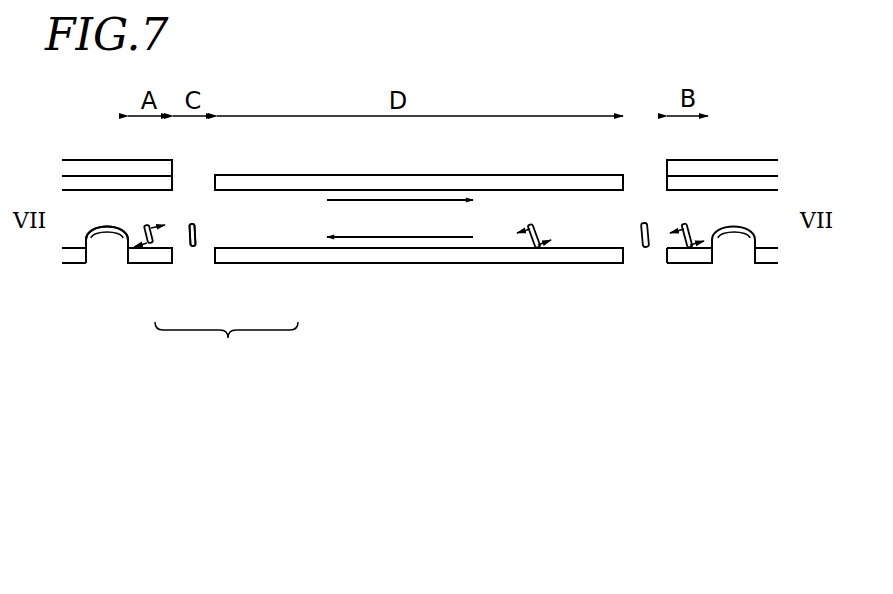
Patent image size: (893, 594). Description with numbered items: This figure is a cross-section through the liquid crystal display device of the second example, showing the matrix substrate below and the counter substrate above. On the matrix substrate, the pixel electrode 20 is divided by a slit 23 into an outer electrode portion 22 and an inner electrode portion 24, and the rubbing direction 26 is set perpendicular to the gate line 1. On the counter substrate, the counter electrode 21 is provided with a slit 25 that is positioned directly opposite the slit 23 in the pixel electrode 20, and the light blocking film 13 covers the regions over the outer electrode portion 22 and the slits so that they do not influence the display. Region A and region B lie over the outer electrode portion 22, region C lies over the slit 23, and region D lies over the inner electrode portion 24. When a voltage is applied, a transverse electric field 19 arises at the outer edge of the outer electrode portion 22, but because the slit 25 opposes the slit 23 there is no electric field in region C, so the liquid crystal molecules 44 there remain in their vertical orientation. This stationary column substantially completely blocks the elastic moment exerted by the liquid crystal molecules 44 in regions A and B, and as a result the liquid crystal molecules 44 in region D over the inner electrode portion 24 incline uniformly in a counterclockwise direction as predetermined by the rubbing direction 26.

The gate line 1 is at (76, 262).
The light blocking film 13 is at (100, 167).
The transverse electric field 19 is at (105, 263).
The pixel electrode 20 is at (226, 347).
The counter electrode 21 is at (523, 183).
The outer electrode portion 22 is at (157, 263).
The slit 23 is at (191, 264).
The inner electrode portion 24 is at (301, 257).
The slit 25 is at (197, 179).
The rubbing direction 26 is at (398, 236).
The liquid crystal molecules 44 is at (197, 233).